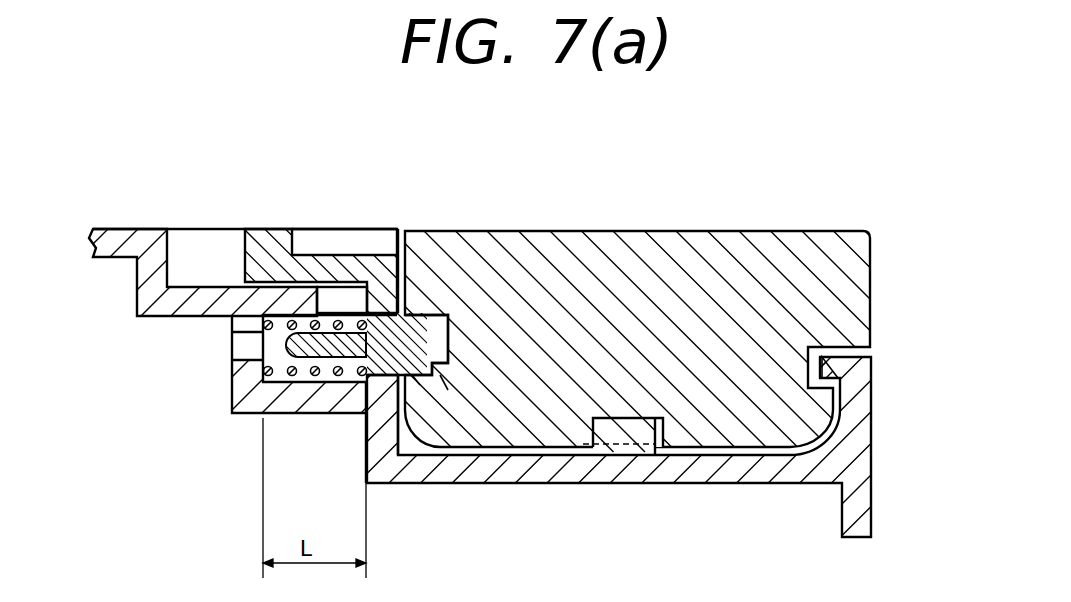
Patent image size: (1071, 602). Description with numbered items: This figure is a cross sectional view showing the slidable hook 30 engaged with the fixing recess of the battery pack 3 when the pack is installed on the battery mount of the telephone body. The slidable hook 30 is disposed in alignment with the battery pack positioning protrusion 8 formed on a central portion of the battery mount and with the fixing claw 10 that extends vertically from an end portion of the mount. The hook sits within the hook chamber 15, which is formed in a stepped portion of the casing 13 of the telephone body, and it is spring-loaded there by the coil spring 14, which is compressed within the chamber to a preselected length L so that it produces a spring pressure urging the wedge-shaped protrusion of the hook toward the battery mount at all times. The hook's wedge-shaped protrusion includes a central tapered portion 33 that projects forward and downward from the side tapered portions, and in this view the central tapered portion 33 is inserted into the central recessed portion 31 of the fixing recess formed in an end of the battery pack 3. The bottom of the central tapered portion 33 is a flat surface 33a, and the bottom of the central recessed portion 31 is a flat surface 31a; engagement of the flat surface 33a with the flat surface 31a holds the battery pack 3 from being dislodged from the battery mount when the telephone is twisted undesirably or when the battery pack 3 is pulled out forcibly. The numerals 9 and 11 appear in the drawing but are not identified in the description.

The battery pack 3 is at (600, 245).
The battery pack positioning protrusion 8 is at (622, 430).
The groove 9 is at (622, 420).
The fixing claw 10 is at (838, 368).
The engaging portion 11 is at (836, 347).
The casing 13 is at (145, 268).
The coil spring 14 is at (260, 365).
The hook chamber 15 is at (283, 322).
The slidable hook 30 is at (281, 245).
The central recessed portion 31 is at (420, 322).
The flat surface 31a is at (448, 390).
The central tapered portion 33 is at (425, 350).
The flat surface 33a is at (420, 385).